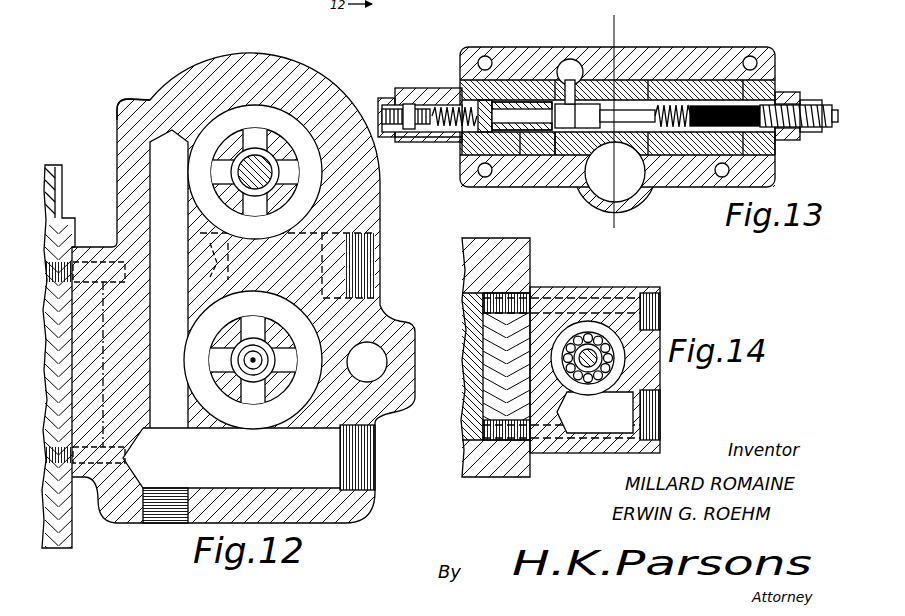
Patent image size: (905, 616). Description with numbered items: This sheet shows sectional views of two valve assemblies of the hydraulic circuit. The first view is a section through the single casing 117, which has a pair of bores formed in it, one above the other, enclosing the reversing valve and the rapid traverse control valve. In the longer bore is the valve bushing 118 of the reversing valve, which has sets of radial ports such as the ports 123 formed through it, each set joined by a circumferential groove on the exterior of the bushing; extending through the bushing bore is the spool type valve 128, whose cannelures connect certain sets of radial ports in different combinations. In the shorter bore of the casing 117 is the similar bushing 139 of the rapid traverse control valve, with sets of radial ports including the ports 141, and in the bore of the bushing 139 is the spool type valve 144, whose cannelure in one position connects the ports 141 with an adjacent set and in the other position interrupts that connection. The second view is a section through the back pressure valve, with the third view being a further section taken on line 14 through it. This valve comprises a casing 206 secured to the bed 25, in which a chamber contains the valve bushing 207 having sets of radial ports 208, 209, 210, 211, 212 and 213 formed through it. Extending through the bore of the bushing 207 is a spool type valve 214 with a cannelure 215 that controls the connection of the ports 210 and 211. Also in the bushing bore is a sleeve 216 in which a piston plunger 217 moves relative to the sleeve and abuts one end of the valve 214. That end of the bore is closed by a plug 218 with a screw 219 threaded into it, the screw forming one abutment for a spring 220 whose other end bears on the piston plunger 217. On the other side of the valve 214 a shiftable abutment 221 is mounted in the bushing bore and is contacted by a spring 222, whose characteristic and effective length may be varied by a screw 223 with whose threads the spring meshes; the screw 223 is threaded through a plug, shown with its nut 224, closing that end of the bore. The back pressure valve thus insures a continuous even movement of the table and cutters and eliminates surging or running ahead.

In FIG. 12, the bed 25 is at (60, 535).
In FIG. 14, the bed 25 is at (518, 266).
In FIG. 12, the casing 117 is at (190, 95).
In FIG. 12, the bushing 139 is at (192, 133).
In FIG. 12, the radial ports 141 is at (262, 136).
In FIG. 12, the spool type valve 144 is at (242, 173).
In FIG. 12, the valve bushing 118 is at (222, 330).
In FIG. 12, the radial ports 123 is at (258, 397).
In FIG. 12, the spool type valve 128 is at (237, 358).
In FIG. 13, the casing 206 is at (653, 52).
In FIG. 14, the casing 206 is at (593, 290).
In FIG. 13, the valve bushing 207 is at (778, 92).
In FIG. 14, the valve bushing 207 is at (612, 360).
In FIG. 13, the radial ports 208 is at (775, 150).
In FIG. 13, the radial ports 209 is at (650, 190).
In FIG. 13, the radial ports 210 is at (590, 172).
In FIG. 14, the radial ports 210 is at (622, 362).
In FIG. 13, the radial ports 211 is at (553, 155).
In FIG. 13, the radial ports 212 is at (522, 150).
In FIG. 13, the radial ports 213 is at (460, 170).
In FIG. 13, the spool type valve 214 is at (556, 104).
In FIG. 14, the spool type valve 214 is at (588, 365).
In FIG. 13, the cannelure 215 is at (583, 97).
In FIG. 13, the sleeve 216 is at (513, 108).
In FIG. 13, the piston plunger 217 is at (490, 100).
In FIG. 13, the plug 218 is at (430, 95).
In FIG. 13, the screw 219 is at (425, 145).
In FIG. 13, the spring 220 is at (444, 97).
In FIG. 13, the shiftable abutment 221 is at (640, 102).
In FIG. 13, the spring 222 is at (683, 165).
In FIG. 13, the screw 223 is at (786, 102).
In FIG. 13, the stem nut 224 is at (787, 140).
In FIG. 13, the section line 14- 14 is at (633, 32).